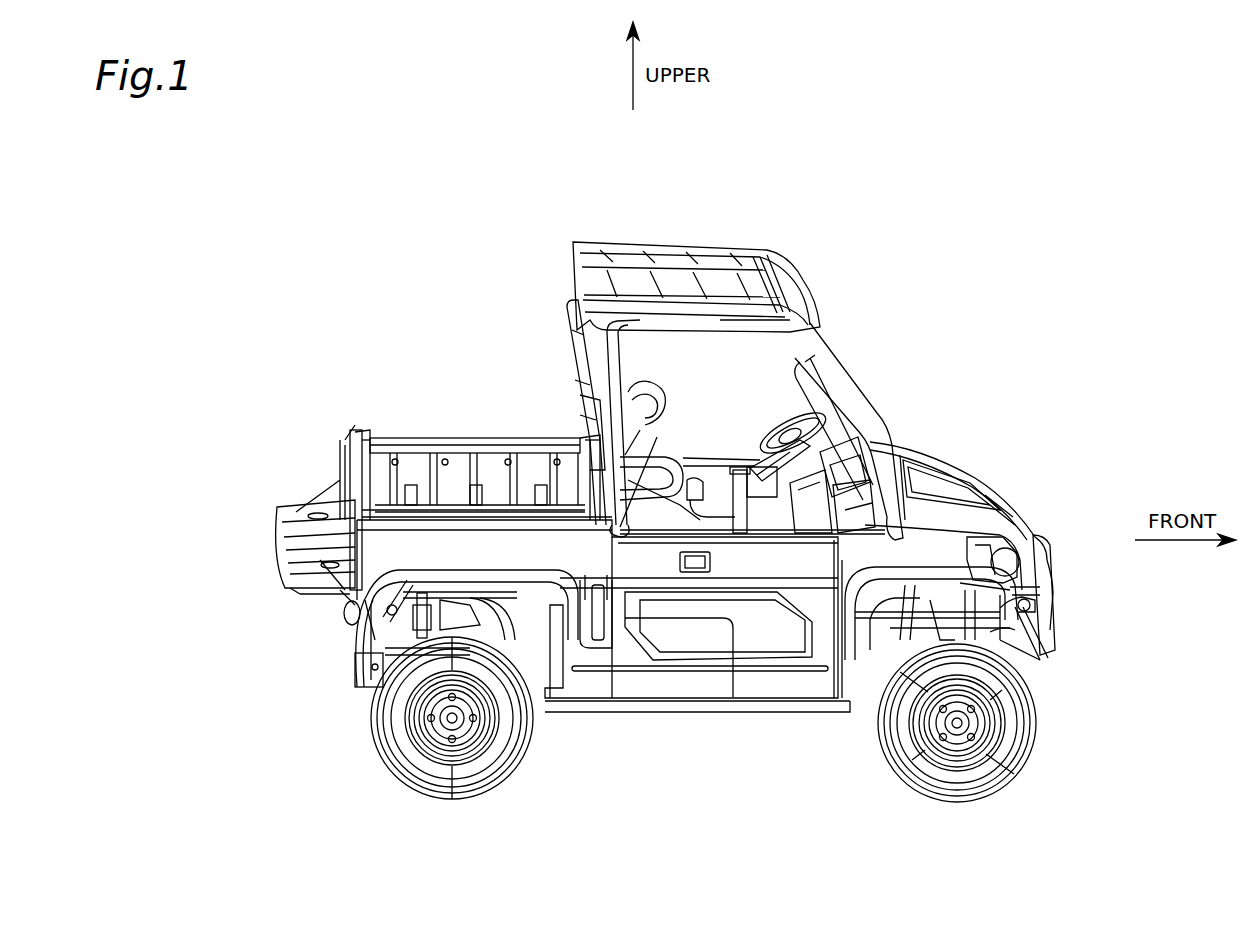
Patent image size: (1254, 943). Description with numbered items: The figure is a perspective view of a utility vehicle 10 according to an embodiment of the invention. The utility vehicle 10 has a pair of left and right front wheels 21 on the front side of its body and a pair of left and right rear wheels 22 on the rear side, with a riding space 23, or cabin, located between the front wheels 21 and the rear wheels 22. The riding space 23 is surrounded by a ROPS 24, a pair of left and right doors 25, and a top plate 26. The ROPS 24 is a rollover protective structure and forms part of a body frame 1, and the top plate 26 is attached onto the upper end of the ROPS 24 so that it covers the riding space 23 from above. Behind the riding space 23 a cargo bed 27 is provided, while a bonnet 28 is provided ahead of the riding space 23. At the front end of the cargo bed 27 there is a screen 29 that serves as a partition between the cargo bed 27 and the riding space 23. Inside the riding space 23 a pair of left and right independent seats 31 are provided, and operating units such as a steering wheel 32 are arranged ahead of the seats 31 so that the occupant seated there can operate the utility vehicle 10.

The body frame 1 is at (862, 358).
The utility vehicle 10 is at (958, 229).
The front wheels 21 is at (992, 795).
The rear wheels 22 is at (485, 790).
The riding space 23 is at (678, 367).
The ROPS 24 is at (832, 353).
The doors 25 is at (763, 625).
The top plate 26 is at (700, 275).
The cargo bed 27 is at (437, 465).
The bonnet 28 is at (940, 462).
The screen 29 is at (568, 330).
The seats 31 is at (695, 513).
The steering wheel 32 is at (768, 435).